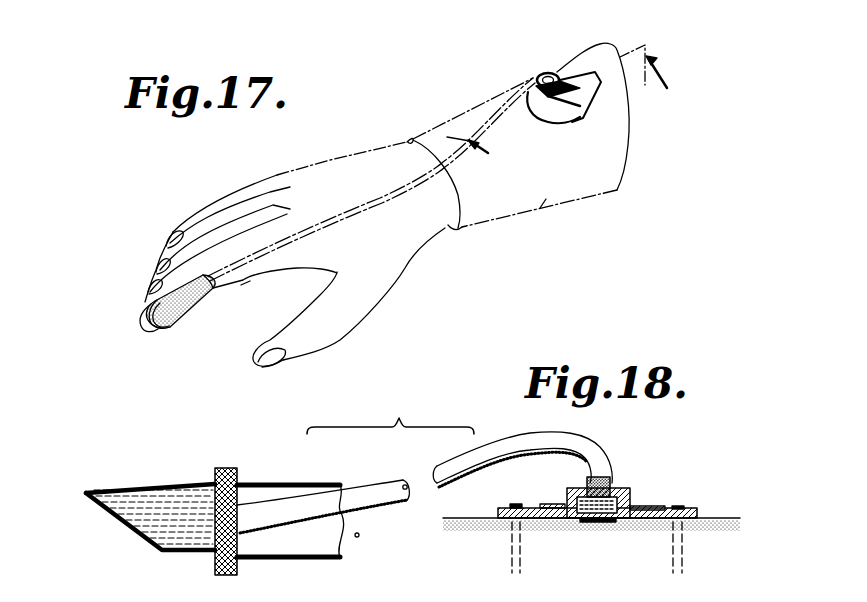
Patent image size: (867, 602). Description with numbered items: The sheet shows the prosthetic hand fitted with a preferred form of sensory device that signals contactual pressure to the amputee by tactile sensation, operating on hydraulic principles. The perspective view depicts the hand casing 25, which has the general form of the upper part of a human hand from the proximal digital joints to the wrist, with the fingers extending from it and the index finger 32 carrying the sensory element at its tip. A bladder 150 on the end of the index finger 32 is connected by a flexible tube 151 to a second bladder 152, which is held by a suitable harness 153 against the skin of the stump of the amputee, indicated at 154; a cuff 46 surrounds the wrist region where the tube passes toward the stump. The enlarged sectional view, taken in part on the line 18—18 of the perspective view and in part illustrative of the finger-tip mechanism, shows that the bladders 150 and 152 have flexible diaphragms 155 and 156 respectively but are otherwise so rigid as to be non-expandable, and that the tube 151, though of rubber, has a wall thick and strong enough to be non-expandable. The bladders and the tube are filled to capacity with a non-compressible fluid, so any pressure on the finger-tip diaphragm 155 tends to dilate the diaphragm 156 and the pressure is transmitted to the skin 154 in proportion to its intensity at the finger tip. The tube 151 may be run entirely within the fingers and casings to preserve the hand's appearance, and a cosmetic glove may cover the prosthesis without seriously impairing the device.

In FIG. 17, the casing 25 is at (316, 175).
In FIG. 17, the index finger 32 is at (245, 277).
In FIG. 17, the cuff 46 is at (543, 203).
In FIG. 17, the bladder 150 is at (148, 316).
In FIG. 18, the bladder 150 is at (180, 485).
In FIG. 17, the flexible tube 151 is at (398, 193).
In FIG. 18, the flexible tube 151 is at (377, 488).
In FIG. 17, the second bladder 152 is at (560, 77).
In FIG. 18, the second bladder 152 is at (620, 497).
In FIG. 17, the harness 153 is at (575, 102).
In FIG. 18, the harness 153 is at (663, 510).
In FIG. 17, the skin of the stump 154 is at (548, 117).
In FIG. 18, the skin of the stump 154 is at (635, 532).
In FIG. 17, the flexible diaphragm 155 is at (143, 333).
In FIG. 18, the flexible diaphragm 155 is at (124, 513).
In FIG. 18, the flexible diaphragm 156 is at (597, 518).
In FIG. 17, the section line 18— 18 is at (573, 106).